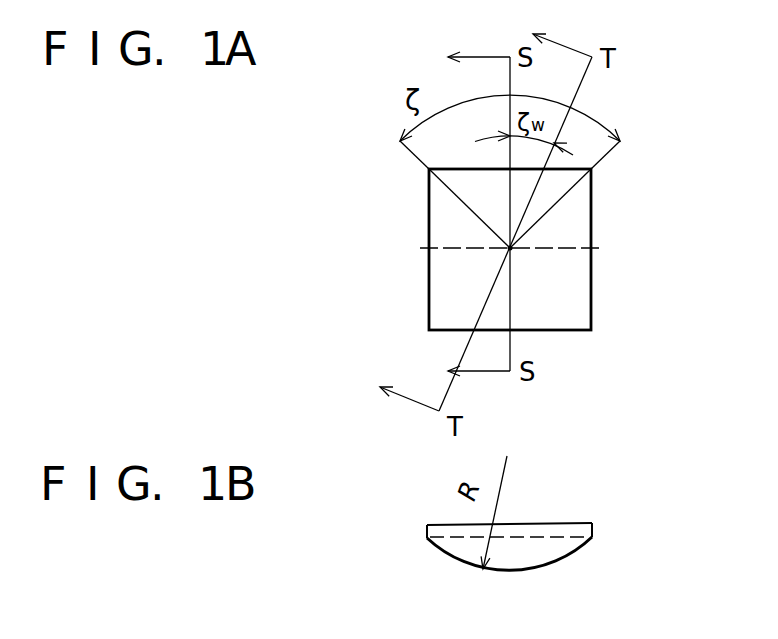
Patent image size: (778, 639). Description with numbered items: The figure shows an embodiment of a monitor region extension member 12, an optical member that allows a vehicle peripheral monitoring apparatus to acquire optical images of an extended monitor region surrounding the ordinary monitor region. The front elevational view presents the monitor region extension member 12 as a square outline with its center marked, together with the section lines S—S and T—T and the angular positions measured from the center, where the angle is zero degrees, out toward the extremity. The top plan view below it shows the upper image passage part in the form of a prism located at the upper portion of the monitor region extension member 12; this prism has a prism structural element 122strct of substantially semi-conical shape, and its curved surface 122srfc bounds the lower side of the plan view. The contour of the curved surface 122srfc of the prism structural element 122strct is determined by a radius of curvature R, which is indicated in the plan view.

In FIG. 1A, the monitor region extension member 12 is at (429, 228).
In FIG. 1B, the prism structural element 122strct is at (563, 520).
In FIG. 1B, the curved surface 122srfc is at (553, 566).